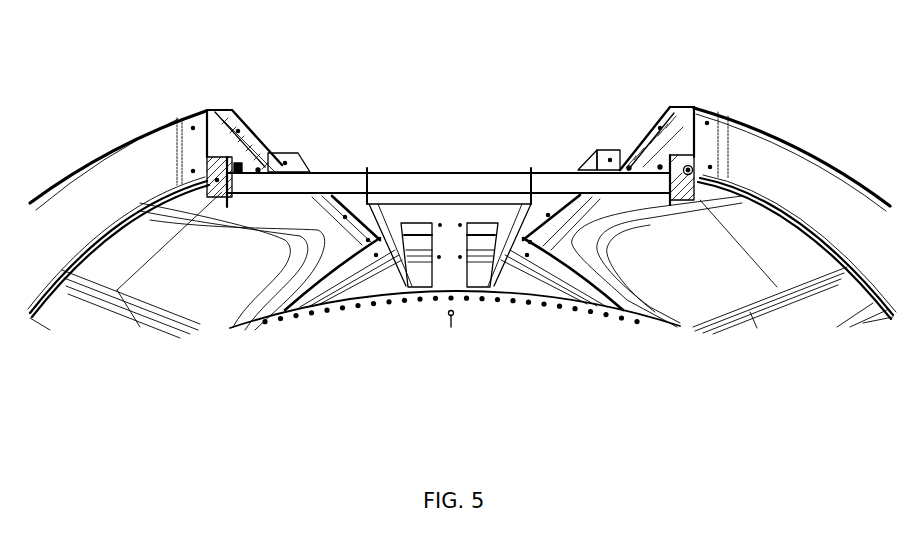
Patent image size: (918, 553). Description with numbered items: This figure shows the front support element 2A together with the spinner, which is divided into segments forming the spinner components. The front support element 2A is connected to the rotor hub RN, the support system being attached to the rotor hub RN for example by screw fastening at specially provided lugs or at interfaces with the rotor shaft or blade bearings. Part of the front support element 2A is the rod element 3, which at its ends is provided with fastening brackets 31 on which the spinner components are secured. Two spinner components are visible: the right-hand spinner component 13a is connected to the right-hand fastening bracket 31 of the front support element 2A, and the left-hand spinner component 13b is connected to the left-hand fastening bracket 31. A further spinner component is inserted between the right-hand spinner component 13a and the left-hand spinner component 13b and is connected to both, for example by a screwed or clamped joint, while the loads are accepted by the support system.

The right-hand spinner component 13a is at (777, 166).
The left-hand spinner component 13b is at (118, 158).
The fastening bracket 31 is at (206, 160).
The rod element 3 is at (347, 184).
The front support element 2A is at (443, 218).
The rotor hub RN is at (587, 206).